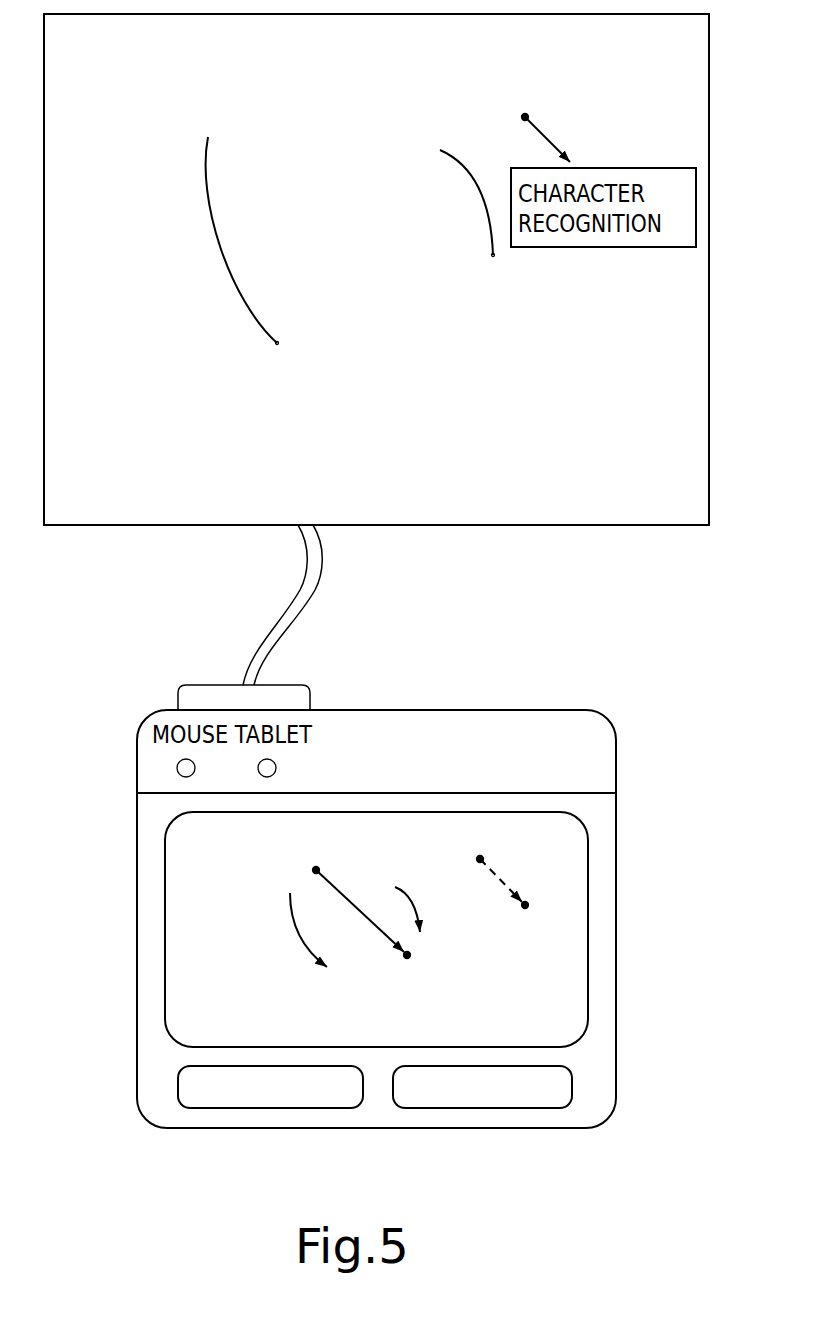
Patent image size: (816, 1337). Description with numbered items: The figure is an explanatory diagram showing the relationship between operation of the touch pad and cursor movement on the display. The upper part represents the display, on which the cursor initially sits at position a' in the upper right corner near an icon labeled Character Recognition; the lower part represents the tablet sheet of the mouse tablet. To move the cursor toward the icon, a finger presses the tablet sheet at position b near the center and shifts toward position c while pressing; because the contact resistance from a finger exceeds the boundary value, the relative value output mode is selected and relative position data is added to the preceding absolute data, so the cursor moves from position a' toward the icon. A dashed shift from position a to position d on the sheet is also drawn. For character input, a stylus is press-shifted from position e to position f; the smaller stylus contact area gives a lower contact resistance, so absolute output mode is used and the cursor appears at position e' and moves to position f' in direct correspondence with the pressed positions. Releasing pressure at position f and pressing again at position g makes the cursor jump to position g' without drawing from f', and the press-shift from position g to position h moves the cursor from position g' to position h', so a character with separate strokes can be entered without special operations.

The cursor position a' is at (534, 120).
The cursor position e' is at (237, 220).
The cursor position f' is at (288, 351).
The cursor position g' is at (454, 189).
The cursor position h' is at (492, 274).
The tablet position a is at (491, 865).
The tablet position b is at (353, 891).
The tablet position c is at (401, 970).
The tablet position d is at (531, 914).
The tablet position e is at (298, 915).
The tablet position f is at (334, 979).
The tablet position g is at (399, 894).
The tablet position h is at (433, 938).